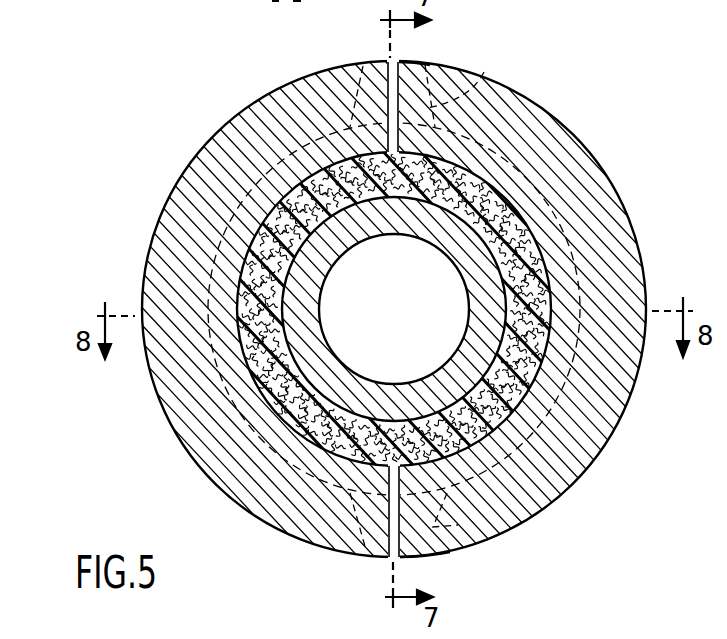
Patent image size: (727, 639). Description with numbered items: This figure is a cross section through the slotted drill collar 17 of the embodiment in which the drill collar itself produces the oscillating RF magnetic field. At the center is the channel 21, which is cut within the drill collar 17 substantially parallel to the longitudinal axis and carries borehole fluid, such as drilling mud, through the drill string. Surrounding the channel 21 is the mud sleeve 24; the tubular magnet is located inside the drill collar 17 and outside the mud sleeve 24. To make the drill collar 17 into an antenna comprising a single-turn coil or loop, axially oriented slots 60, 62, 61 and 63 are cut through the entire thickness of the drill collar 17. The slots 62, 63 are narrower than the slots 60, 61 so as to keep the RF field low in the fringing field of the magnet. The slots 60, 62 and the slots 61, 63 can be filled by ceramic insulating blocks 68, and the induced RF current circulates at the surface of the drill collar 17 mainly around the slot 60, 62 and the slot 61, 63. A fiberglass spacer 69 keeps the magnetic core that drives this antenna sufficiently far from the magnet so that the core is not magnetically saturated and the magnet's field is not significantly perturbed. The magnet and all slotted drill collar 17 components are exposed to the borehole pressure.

The drill collar 17 is at (558, 145).
The channel 21 is at (404, 367).
The mud sleeve 24 is at (470, 358).
The slot 60 is at (434, 527).
The slot 61 is at (485, 73).
The slot 62 is at (450, 552).
The slot 63 is at (400, 80).
The ceramic insulating block 68 is at (388, 63).
The fiberglass spacer 69 is at (238, 220).